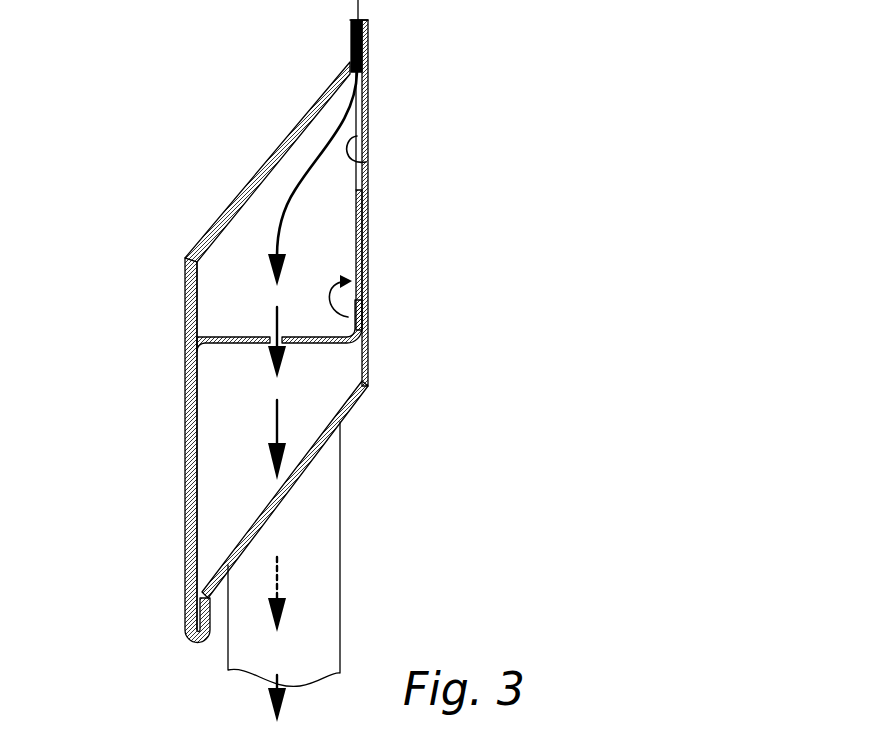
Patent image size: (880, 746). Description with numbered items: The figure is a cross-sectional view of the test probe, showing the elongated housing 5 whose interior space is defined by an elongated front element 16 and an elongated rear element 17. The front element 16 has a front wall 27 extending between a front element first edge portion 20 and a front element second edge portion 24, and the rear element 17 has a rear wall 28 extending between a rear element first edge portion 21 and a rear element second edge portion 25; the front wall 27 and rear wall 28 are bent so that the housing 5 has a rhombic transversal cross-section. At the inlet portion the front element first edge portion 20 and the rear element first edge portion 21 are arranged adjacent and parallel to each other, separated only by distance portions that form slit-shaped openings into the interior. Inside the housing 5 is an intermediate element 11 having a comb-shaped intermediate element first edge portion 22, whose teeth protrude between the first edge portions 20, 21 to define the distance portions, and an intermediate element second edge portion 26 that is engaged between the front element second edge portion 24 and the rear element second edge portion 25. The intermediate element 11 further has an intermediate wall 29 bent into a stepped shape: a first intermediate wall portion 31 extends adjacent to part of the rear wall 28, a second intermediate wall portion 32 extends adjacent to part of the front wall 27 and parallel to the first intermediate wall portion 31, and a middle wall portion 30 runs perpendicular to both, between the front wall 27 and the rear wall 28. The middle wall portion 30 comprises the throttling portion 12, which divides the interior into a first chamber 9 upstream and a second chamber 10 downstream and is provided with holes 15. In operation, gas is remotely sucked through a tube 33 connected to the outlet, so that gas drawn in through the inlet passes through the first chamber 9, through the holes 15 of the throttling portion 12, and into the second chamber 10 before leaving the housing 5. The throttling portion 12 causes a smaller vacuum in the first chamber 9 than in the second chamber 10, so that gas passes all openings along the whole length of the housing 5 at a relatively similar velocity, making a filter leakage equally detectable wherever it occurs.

The elongated housing 5 is at (140, 470).
The first chamber 9 is at (333, 230).
The second chamber 10 is at (338, 380).
The intermediate element 11 is at (205, 480).
The throttling portion 12 is at (315, 343).
The hole 15 is at (275, 338).
The front element 16 is at (180, 295).
The rear element 17 is at (378, 172).
The front element first edge portion 20 is at (352, 48).
The rear element first edge portion 21 is at (368, 40).
The intermediate element first edge portion 22 is at (367, 155).
The front element second edge portion 24 is at (184, 603).
The rear element second edge portion 25 is at (207, 595).
The intermediate element second edge portion 26 is at (185, 617).
The front wall 27 is at (178, 318).
The rear wall 28 is at (378, 293).
The intermediate wall 29 is at (363, 316).
The middle wall portion 30 is at (225, 343).
The first intermediate wall portion 31 is at (352, 250).
The second intermediate wall portion 32 is at (202, 418).
The tube 33 is at (340, 525).